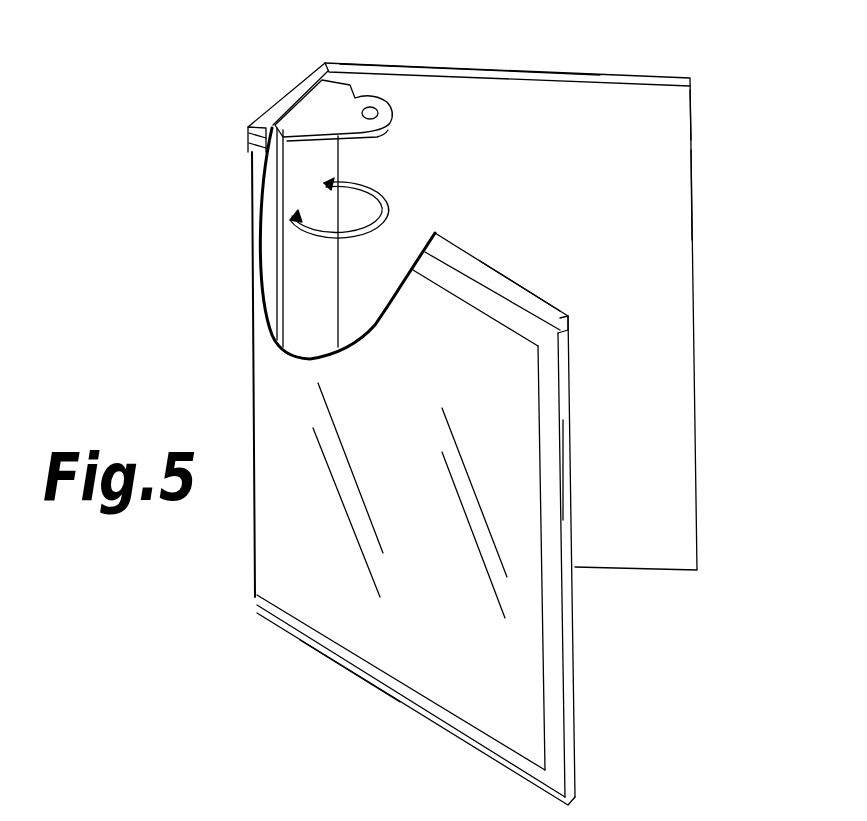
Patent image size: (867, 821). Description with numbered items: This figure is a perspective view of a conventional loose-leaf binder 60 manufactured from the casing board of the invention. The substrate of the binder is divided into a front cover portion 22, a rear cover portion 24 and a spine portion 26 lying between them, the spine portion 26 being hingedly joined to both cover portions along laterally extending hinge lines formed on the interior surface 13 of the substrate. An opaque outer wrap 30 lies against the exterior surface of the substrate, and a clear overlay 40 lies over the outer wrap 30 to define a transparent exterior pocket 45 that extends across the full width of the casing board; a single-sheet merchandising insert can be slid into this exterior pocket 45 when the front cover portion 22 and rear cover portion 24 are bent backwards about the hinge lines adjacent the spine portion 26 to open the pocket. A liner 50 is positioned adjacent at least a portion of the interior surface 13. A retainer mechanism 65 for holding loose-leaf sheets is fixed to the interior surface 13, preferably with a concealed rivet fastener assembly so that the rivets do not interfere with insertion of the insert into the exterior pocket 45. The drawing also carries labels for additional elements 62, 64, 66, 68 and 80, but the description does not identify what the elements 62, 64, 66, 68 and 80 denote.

The interior surface 13 is at (620, 110).
The front cover portion 22 is at (577, 733).
The rear cover portion 24 is at (667, 187).
The spine portion 26 is at (280, 100).
The opaque outer wrap 30 is at (247, 137).
The clear overlay 40 is at (550, 642).
The exterior pocket 45 is at (450, 633).
The liner 50 is at (478, 172).
The loose-leaf binder 60 is at (722, 103).
The frame top rail 62 is at (570, 370).
The side edge 64 is at (692, 137).
The retainer mechanism 65 is at (355, 98).
The top edge 66 is at (492, 68).
The bottom rail 68 is at (307, 646).
The frame side rail 80 is at (542, 457).